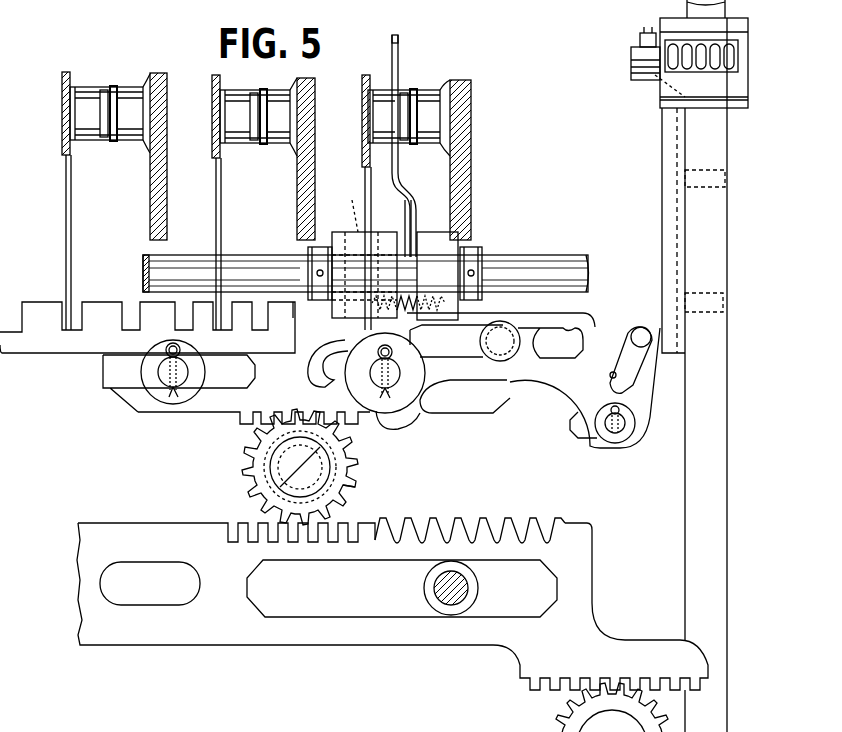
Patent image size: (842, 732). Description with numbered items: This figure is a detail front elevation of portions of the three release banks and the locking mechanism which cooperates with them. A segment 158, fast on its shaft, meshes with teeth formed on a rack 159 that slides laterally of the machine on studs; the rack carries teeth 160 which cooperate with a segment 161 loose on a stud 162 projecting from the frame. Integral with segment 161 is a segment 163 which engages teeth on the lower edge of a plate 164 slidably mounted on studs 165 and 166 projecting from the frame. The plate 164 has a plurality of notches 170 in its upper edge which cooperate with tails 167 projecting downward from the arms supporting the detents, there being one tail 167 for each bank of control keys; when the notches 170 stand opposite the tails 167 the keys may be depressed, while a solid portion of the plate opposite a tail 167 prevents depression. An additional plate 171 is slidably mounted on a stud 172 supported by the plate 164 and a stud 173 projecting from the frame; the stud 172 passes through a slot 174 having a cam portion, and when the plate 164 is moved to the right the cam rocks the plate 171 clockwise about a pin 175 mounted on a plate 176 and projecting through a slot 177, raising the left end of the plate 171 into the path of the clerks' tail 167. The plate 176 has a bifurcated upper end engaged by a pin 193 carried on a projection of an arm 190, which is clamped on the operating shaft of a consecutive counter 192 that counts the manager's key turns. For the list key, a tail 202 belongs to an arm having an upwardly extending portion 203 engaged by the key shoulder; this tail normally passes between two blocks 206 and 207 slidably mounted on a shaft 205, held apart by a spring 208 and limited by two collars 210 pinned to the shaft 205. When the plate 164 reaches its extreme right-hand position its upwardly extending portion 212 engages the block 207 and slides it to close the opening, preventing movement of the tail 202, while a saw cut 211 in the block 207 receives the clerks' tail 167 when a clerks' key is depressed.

The segment 158 is at (556, 722).
The rack 159 is at (392, 594).
The teeth 160 is at (232, 524).
The segment 161 is at (352, 495).
The stud 162 is at (330, 465).
The segment 163 is at (252, 457).
The plate 164 is at (494, 397).
The stud 165 is at (158, 369).
The stud 166 is at (360, 392).
The tail 167 is at (70, 193).
The notches 170 is at (125, 312).
The plate 171 is at (555, 406).
The stud 172 is at (480, 336).
The stud 173 is at (603, 413).
The slot 174 is at (568, 332).
The pin 175 is at (641, 327).
The plate 176 is at (663, 262).
The slot 177 is at (609, 374).
The arm 190 is at (636, 45).
The consecutive counter 192 is at (745, 50).
The pin 193 is at (652, 30).
The tail 202 is at (411, 230).
The upwardly extending portion 203 is at (399, 68).
The shaft 205 is at (560, 247).
The block 206 is at (450, 240).
The block 207 is at (358, 232).
The spring 208 is at (405, 308).
The collars 210 is at (310, 257).
The saw cut 211 is at (346, 207).
The upwardly extending portion 212 is at (300, 307).